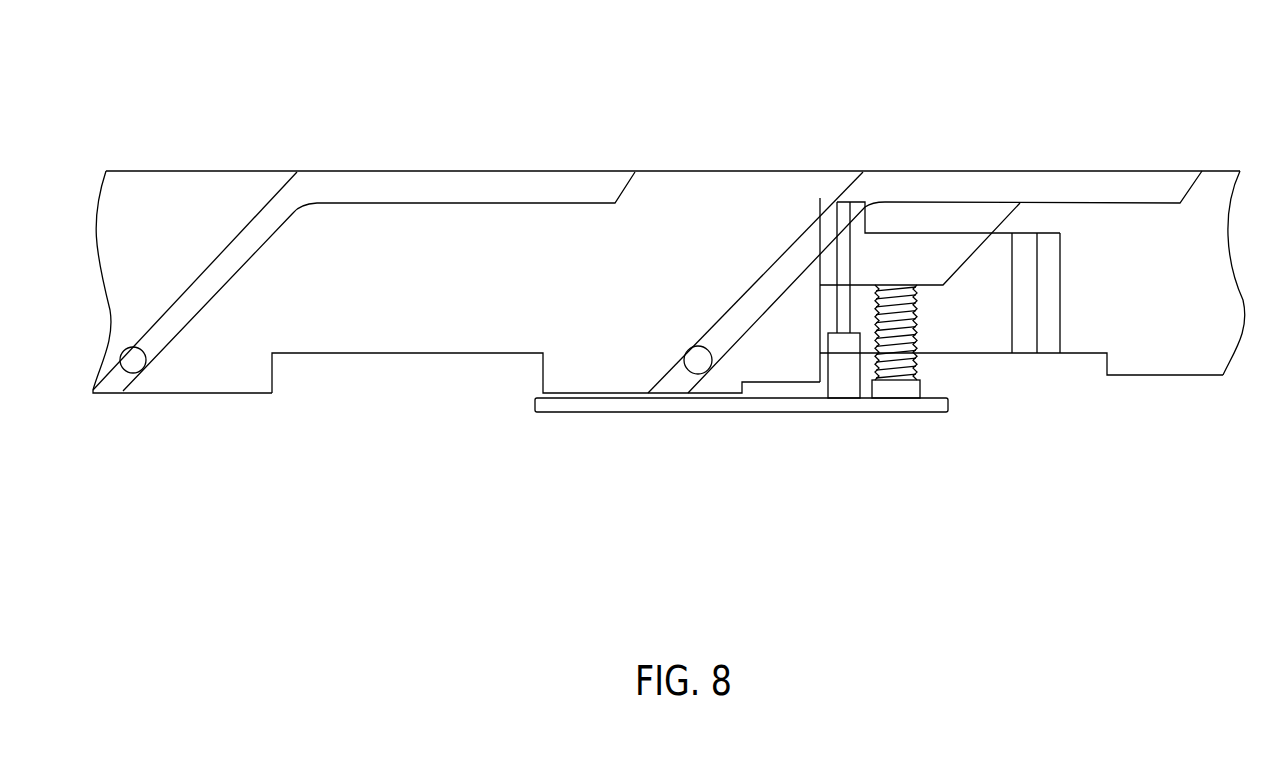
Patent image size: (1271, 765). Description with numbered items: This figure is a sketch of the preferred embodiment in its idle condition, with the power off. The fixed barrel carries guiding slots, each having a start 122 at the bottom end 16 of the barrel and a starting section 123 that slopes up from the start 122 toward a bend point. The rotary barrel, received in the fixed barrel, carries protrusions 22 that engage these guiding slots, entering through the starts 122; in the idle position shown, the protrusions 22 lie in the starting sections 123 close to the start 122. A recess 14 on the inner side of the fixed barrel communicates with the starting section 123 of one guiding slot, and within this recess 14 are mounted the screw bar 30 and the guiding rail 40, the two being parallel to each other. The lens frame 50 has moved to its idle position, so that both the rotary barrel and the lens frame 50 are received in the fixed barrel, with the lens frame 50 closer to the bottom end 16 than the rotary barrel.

The recess 14 is at (952, 318).
The bottom end 16 is at (258, 393).
The protrusion 22 is at (138, 358).
The screw bar 30 is at (918, 292).
The guiding rail 40 is at (845, 212).
The lens frame 50 is at (610, 405).
The start 122 is at (100, 393).
The starting section 123 is at (260, 235).